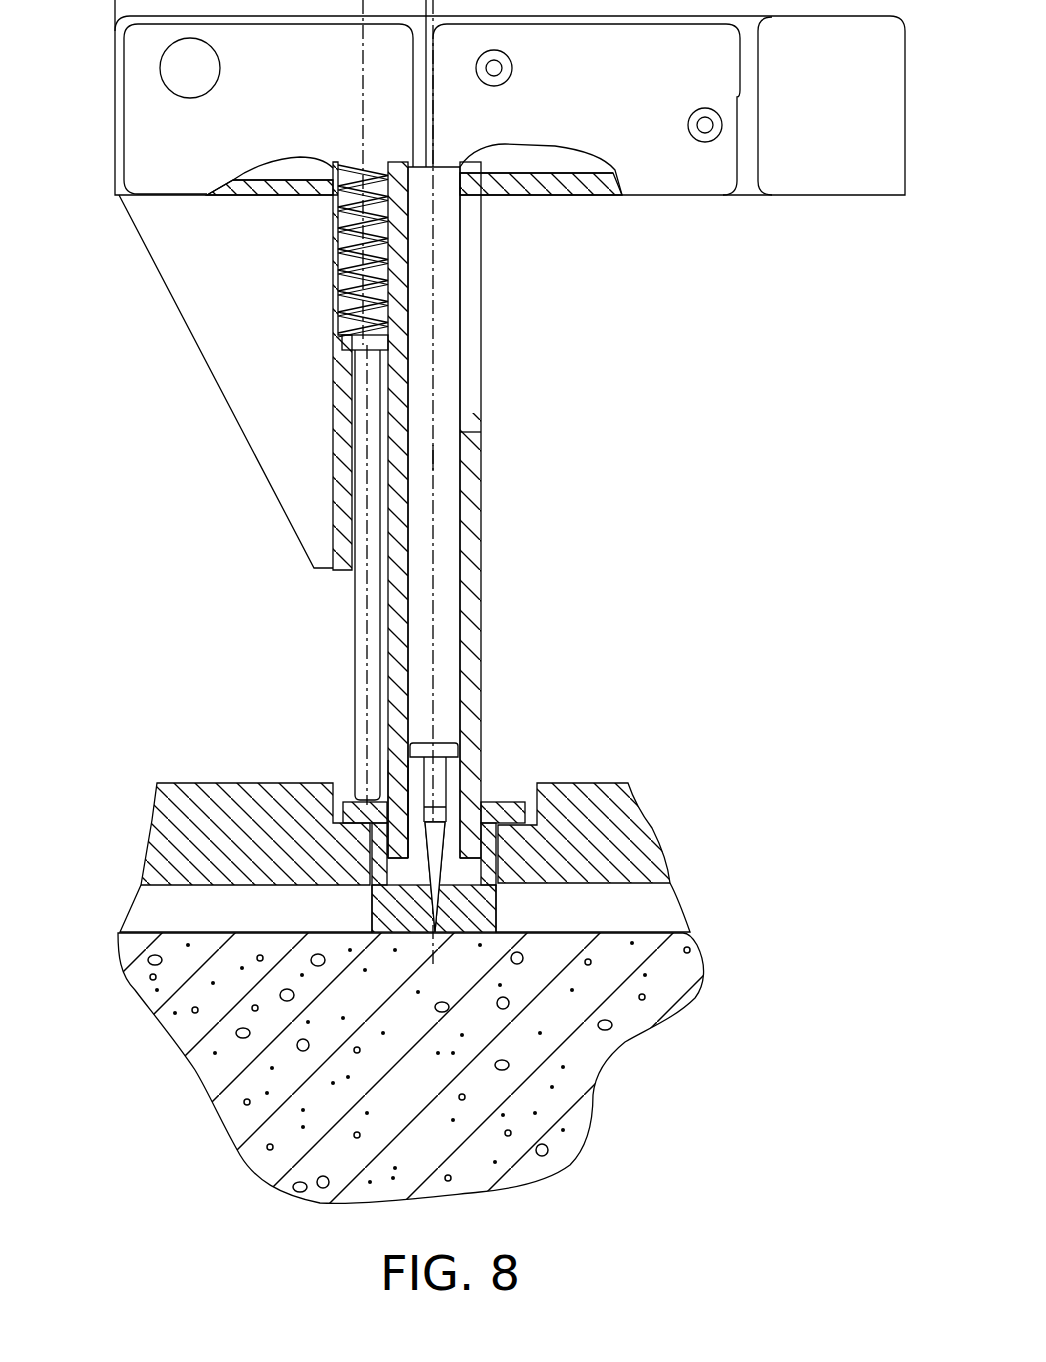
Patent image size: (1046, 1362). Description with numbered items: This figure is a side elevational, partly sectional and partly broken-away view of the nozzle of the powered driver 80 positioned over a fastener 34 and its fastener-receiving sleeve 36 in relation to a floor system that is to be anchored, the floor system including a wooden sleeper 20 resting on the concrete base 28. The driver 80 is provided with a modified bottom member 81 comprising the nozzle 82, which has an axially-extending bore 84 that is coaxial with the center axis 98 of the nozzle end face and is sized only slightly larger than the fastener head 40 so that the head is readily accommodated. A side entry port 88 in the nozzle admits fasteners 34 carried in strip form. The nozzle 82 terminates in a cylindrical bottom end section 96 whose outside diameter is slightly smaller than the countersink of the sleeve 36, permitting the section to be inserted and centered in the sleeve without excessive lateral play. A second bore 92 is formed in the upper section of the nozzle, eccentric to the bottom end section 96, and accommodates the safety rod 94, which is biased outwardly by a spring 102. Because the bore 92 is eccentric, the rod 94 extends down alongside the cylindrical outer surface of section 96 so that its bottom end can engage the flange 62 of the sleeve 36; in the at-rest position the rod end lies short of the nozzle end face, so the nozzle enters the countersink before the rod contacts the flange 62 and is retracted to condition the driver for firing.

The wooden sleeper 20 is at (648, 830).
The base 28 is at (690, 1000).
The fastener 34 is at (428, 782).
The anchor sleeve 36 is at (376, 906).
The fastener head 40 is at (447, 744).
The flange 62 is at (503, 797).
The driver 80 is at (667, 442).
The bottom member 81 is at (185, 331).
The nozzle 82 is at (481, 508).
The bore 84 is at (448, 590).
The side entry port 88 is at (472, 292).
The bore 92 is at (362, 478).
The safety rod 94 is at (362, 636).
The bottom end section 96 is at (482, 781).
The center axis 98 is at (433, 458).
The spring 102 is at (340, 275).